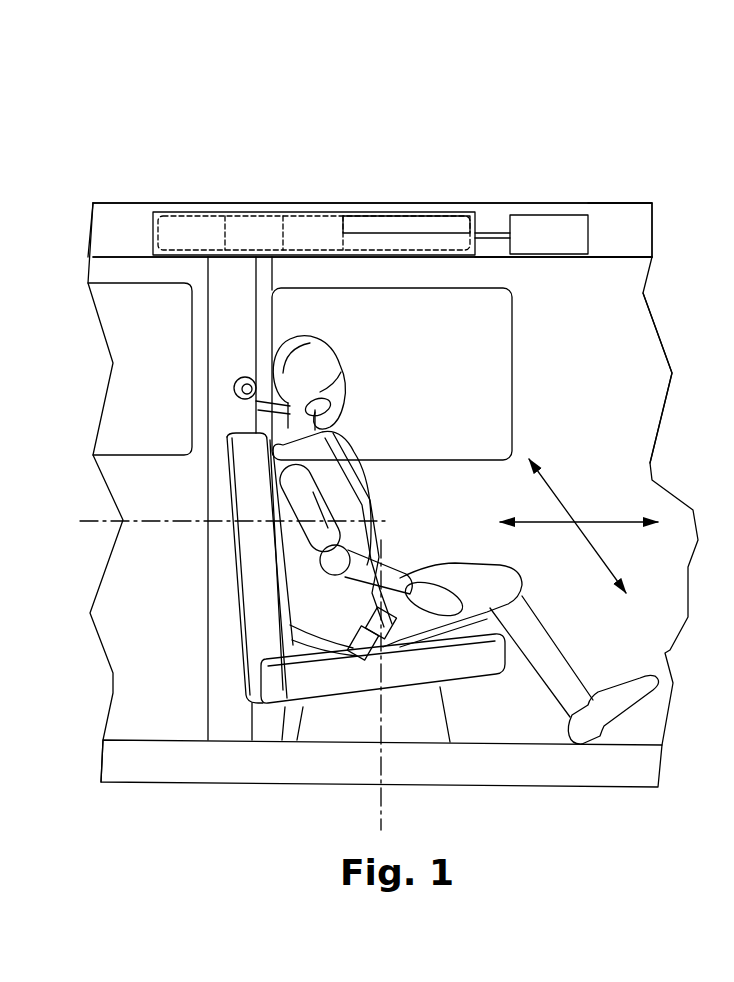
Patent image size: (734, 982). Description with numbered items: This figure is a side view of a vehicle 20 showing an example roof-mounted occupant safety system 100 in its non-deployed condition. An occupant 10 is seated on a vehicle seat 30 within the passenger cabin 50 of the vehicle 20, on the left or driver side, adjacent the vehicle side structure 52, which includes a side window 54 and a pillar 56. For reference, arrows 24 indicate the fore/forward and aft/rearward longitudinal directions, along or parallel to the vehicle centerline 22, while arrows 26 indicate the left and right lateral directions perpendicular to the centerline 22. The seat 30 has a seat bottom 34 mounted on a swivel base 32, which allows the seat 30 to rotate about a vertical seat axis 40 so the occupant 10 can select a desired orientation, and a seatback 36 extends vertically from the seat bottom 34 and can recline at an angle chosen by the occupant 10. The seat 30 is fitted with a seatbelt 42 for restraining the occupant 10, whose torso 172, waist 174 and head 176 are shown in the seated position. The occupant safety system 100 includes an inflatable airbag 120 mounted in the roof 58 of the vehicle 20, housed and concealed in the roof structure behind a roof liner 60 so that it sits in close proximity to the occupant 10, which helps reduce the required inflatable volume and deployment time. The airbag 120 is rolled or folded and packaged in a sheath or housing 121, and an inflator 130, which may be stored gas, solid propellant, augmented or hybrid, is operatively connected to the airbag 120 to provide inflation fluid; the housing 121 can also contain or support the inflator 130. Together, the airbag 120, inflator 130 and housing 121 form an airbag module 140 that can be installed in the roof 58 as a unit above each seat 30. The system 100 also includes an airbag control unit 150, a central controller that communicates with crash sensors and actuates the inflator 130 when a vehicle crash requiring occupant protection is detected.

The occupant 10 is at (466, 539).
The vehicle 20 is at (625, 149).
The vehicle centerline 22 is at (185, 517).
The arrows 24 is at (550, 524).
The arrows 26 is at (563, 502).
The vehicle seat 30 is at (332, 632).
The swivel base 32 is at (403, 720).
The seat bottom 34 is at (460, 657).
The seatback 36 is at (258, 556).
The vertical seat axis 40 is at (383, 767).
The seatbelt 42 is at (262, 405).
The passenger cabin 50 is at (608, 340).
The vehicle side structure 52 is at (620, 372).
The side window 54 is at (470, 314).
The pillar 56 is at (237, 297).
The roof 58 is at (625, 238).
The roof liner 60 is at (500, 258).
The occupant safety system 100 is at (525, 113).
The inflatable airbag 120 is at (242, 200).
The housing 121 is at (393, 222).
The inflator 130 is at (357, 217).
The airbag module 140 is at (228, 182).
The airbag control unit 150 is at (536, 213).
The torso 172 is at (350, 505).
The waist 174 is at (338, 615).
The head 176 is at (307, 360).